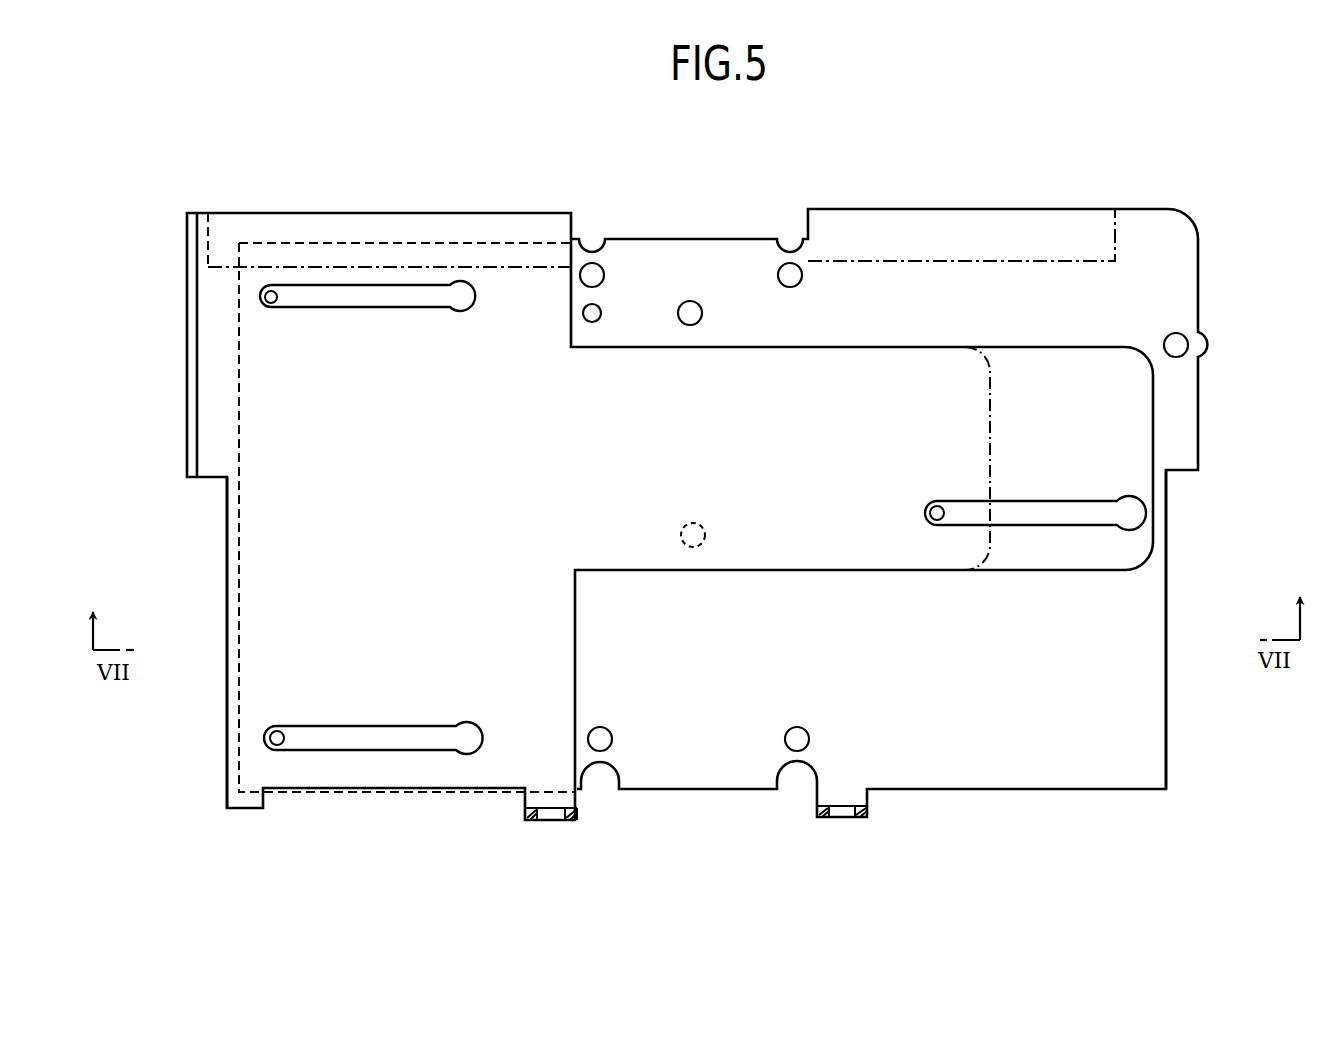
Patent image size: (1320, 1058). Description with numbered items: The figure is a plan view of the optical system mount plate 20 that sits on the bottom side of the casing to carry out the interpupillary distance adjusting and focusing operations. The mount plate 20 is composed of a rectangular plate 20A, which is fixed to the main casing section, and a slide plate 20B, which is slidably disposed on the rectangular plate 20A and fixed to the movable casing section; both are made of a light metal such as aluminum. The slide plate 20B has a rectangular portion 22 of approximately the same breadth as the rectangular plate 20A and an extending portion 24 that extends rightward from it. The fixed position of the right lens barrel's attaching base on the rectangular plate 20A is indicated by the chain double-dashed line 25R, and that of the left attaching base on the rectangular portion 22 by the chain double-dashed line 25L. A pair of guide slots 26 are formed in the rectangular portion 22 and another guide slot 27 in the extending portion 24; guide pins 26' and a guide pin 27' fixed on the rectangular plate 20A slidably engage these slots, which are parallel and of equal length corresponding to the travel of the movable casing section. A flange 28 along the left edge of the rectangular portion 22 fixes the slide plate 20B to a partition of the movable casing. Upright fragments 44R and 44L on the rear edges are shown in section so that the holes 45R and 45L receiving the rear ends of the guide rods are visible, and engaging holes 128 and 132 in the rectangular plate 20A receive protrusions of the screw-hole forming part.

The optical system mount plate 20 is at (713, 225).
The rectangular plate 20A is at (1172, 598).
The slide plate 20B is at (222, 586).
The rectangular portion 22 is at (433, 470).
The extending portion 24 is at (780, 468).
The chain double-dashed line 25L is at (521, 268).
The chain double-dashed line 25R is at (944, 262).
The guide slots 26 is at (371, 517).
The guide pins 26' is at (276, 518).
The guide slot 27 is at (1035, 488).
The guide pin 27' is at (938, 484).
The flange 28 is at (187, 326).
The engaging hole 128 is at (700, 312).
The engaging hole 132 is at (705, 532).
The upright fragment 44L is at (532, 822).
The hole 45L is at (566, 822).
The upright fragment 44R is at (815, 819).
The hole 45R is at (856, 819).